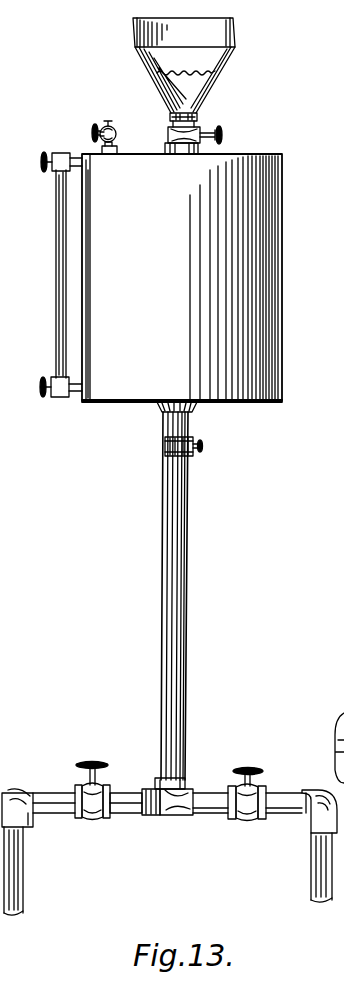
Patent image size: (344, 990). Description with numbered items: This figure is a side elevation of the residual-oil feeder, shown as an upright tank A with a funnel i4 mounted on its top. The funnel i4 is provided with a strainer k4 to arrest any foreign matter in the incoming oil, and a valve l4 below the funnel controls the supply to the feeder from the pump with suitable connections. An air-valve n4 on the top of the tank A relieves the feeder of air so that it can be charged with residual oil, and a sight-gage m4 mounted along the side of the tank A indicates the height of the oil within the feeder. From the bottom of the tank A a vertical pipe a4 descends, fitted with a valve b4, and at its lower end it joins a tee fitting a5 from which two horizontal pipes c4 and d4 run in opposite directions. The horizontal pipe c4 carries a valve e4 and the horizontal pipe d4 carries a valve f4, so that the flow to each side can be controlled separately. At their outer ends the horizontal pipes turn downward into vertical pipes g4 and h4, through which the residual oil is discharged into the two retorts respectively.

The funnel i4 is at (185, 65).
The strainer k4 is at (206, 109).
The valve l4 is at (207, 136).
The air-valve n4 is at (117, 135).
The tank A is at (282, 280).
The sight-gage m4 is at (60, 258).
The vertical pipe a4 is at (186, 591).
The valve b4 is at (196, 452).
The valve e4 is at (97, 763).
The horizontal pipe c4 is at (133, 790).
The tee a5 is at (187, 795).
The horizontal pipe d4 is at (207, 813).
The valve f4 is at (268, 762).
The vertical pipe g4 is at (25, 850).
The vertical pipe h4 is at (312, 867).